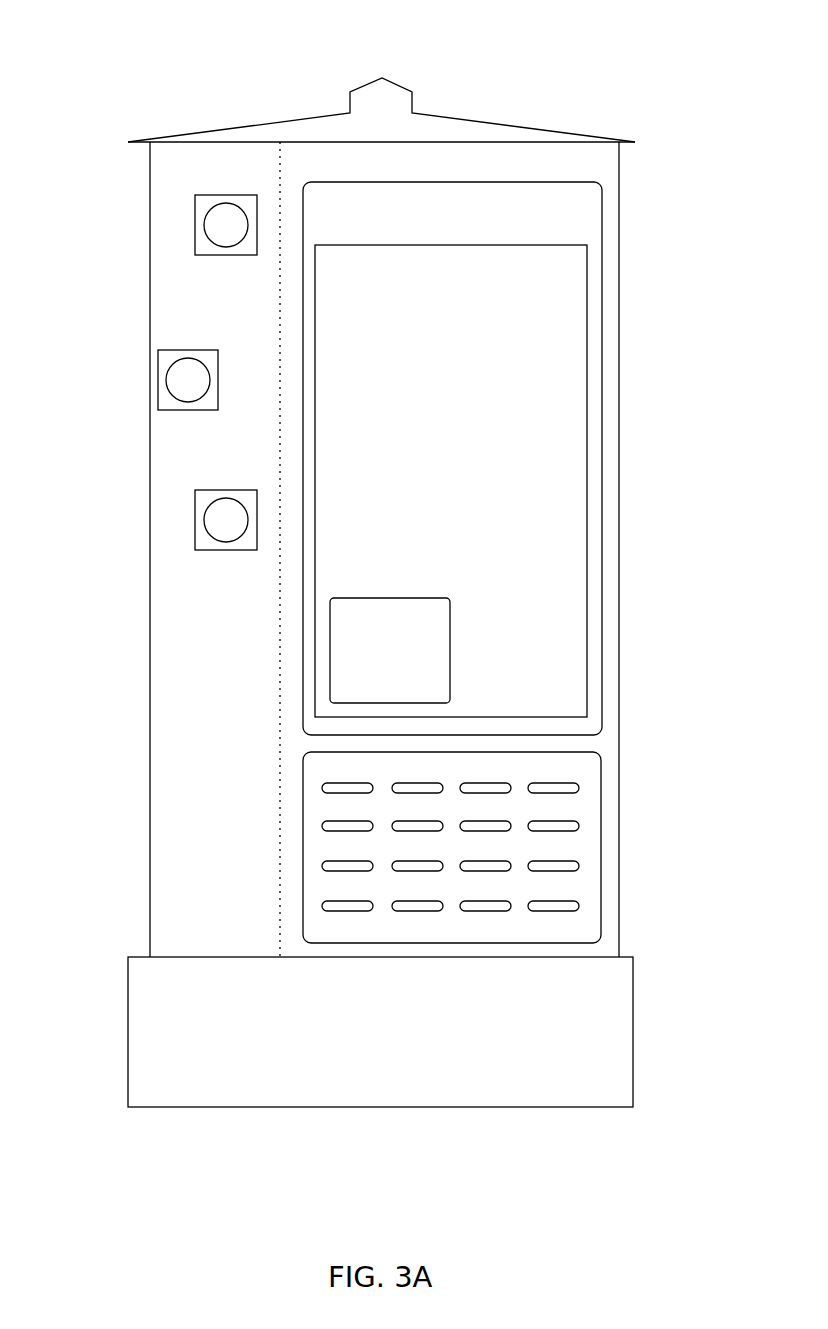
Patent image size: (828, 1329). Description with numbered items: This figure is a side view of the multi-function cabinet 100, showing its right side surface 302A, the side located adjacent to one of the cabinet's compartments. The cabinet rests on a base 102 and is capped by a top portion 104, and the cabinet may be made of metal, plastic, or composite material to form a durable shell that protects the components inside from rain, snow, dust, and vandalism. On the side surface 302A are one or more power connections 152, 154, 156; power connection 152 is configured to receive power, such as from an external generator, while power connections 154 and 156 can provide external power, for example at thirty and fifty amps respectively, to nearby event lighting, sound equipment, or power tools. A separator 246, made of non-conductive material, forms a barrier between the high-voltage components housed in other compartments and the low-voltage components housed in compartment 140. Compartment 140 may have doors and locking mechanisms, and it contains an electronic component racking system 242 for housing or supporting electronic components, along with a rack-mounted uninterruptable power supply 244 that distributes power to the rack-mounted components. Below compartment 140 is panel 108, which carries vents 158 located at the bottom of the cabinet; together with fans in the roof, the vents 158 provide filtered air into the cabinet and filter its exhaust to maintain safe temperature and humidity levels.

The multi-function cabinet 100 is at (140, 30).
The side surface 302A is at (130, 178).
The top portion 104 is at (422, 100).
The base 102 is at (380, 1032).
The compartment 140 is at (452, 458).
The electronic component racking system 242 is at (451, 481).
The rack-mounted uninterruptable power supply 244 is at (390, 650).
The power connection 152 is at (226, 245).
The power connection 154 is at (188, 400).
The power connection 156 is at (226, 539).
The separator 246 is at (276, 730).
The panel 108 is at (606, 745).
The vents 158 is at (586, 825).